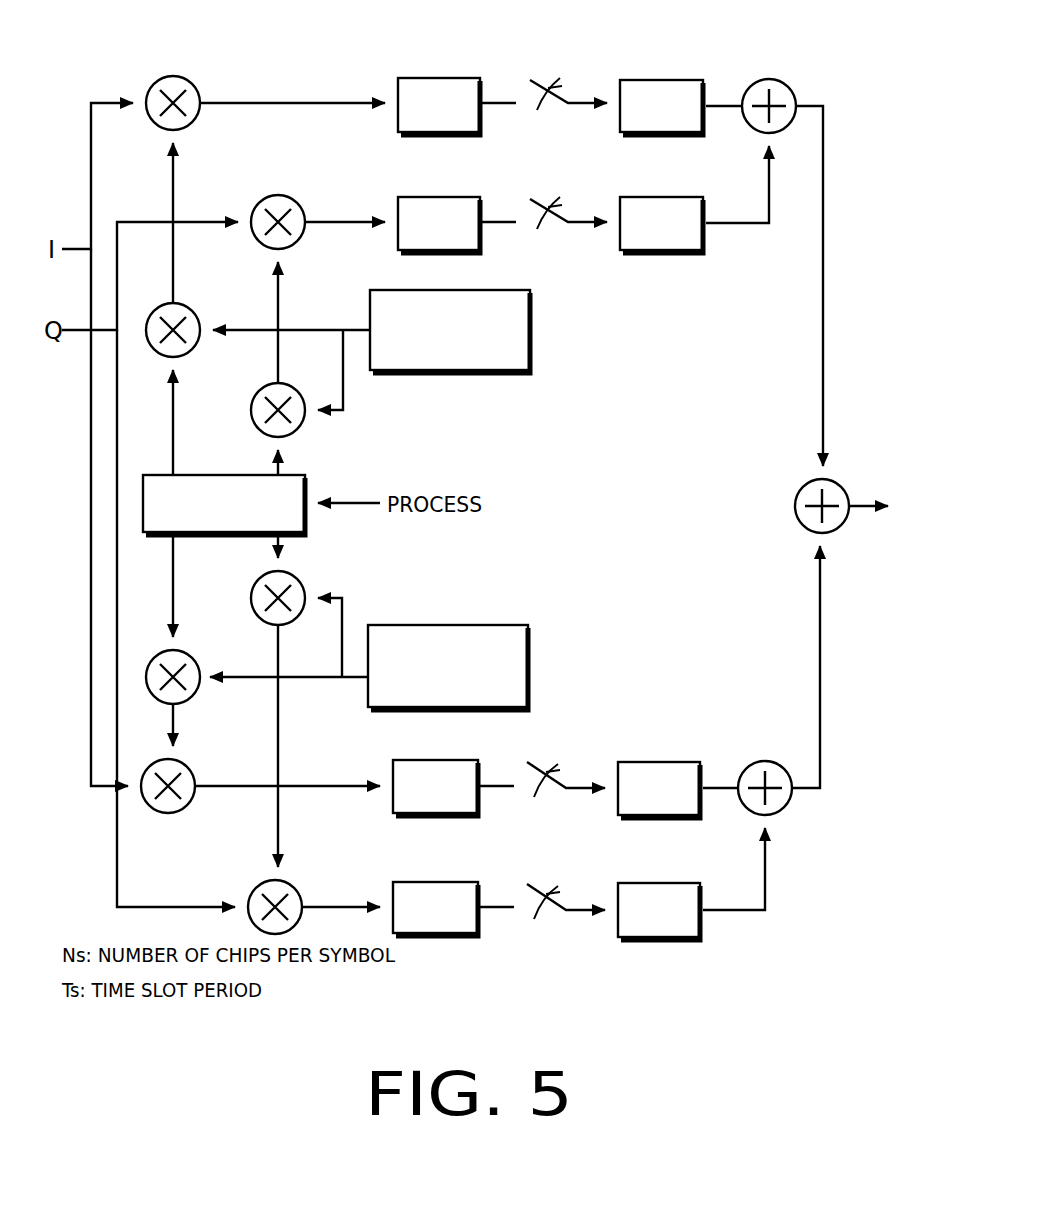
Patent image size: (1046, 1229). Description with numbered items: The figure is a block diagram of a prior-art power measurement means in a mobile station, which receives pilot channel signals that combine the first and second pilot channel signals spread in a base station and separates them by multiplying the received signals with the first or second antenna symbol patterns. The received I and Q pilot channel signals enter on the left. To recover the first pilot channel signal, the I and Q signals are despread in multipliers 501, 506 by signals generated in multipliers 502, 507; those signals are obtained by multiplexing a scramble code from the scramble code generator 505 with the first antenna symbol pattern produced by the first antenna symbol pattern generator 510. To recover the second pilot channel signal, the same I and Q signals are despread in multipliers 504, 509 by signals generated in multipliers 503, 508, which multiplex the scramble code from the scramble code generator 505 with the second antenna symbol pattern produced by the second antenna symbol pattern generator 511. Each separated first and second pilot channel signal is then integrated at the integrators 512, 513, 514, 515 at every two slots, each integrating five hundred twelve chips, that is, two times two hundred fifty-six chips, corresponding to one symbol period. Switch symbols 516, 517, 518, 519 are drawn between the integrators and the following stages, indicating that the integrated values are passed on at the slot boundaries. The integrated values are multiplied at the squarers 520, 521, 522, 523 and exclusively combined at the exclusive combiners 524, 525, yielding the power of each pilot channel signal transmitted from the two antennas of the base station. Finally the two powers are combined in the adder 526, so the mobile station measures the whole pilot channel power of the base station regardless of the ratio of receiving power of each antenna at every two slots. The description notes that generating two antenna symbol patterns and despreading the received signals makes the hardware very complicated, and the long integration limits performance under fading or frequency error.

The multiplier 501 is at (194, 83).
The multiplier 502 is at (195, 308).
The multiplier 503 is at (195, 655).
The multiplier 504 is at (193, 764).
The scramble code generator 505 is at (208, 472).
The multiplier 506 is at (298, 202).
The multiplier 507 is at (300, 386).
The multiplier 508 is at (300, 585).
The multiplier 509 is at (300, 885).
The first antenna symbol pattern generator 510 is at (532, 332).
The second antenna symbol pattern generator 511 is at (530, 668).
The integrator 512 is at (436, 78).
The integrator 513 is at (436, 197).
The integrator 514 is at (434, 760).
The integrator 515 is at (434, 882).
The switch 516 is at (567, 92).
The switch 517 is at (567, 210).
The switch 518 is at (578, 778).
The switch 519 is at (578, 900).
The squarer 520 is at (660, 80).
The squarer 521 is at (660, 197).
The squarer 522 is at (657, 762).
The squarer 523 is at (657, 883).
The exclusive combiner 524 is at (750, 88).
The exclusive combiner 525 is at (747, 770).
The adder 526 is at (841, 487).